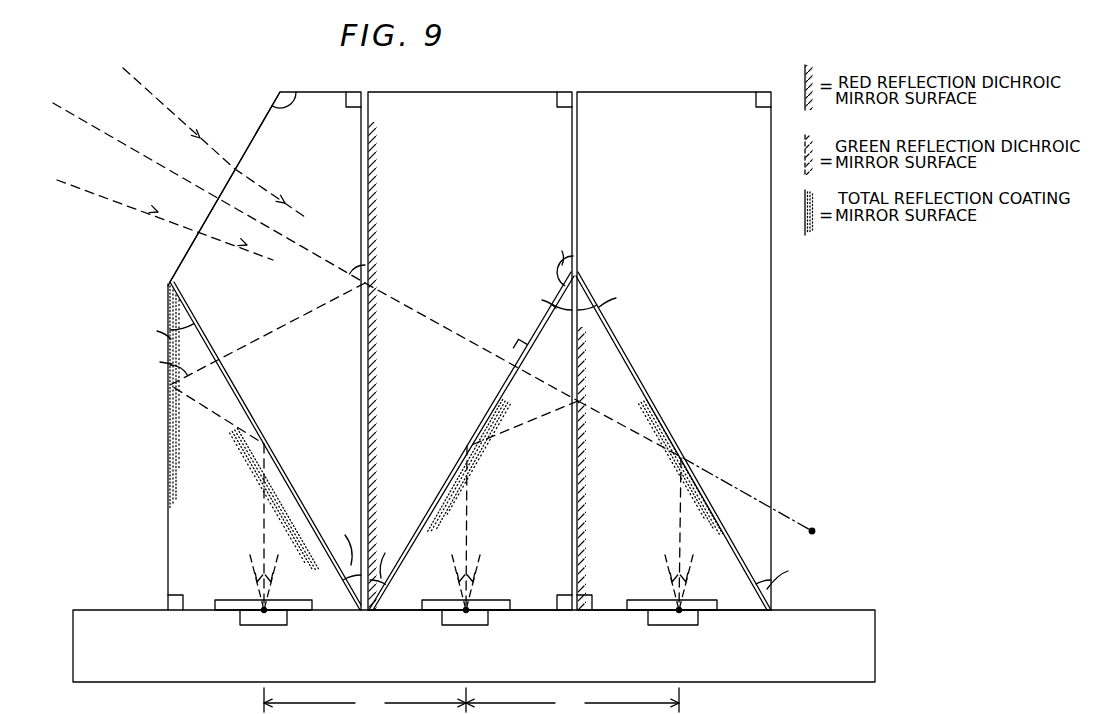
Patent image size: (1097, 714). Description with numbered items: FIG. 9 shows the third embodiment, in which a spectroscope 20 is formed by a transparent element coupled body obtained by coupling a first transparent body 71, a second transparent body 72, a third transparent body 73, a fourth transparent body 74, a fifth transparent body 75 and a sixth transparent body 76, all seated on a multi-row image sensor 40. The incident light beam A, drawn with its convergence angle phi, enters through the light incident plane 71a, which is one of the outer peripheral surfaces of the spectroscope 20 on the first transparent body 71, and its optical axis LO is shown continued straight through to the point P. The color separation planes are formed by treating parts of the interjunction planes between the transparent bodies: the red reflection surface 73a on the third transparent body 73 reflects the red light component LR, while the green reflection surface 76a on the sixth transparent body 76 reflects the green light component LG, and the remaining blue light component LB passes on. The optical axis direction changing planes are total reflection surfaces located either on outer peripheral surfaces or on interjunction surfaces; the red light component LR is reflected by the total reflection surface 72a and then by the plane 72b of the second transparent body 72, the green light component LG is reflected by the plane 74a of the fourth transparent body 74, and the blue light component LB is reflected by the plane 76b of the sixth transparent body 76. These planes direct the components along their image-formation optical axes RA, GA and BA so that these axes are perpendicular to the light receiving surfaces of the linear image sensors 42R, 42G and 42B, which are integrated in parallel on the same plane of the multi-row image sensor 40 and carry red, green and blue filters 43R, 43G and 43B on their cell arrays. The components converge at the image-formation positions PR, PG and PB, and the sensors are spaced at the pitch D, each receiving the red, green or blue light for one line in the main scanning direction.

The spectroscope 20 is at (162, 436).
The multi-row image sensor 40 is at (66, 625).
The first transparent body 71 is at (330, 167).
The light incident plane 71a is at (186, 256).
The second transparent body 72 is at (232, 476).
The total reflection surface 72a is at (168, 505).
The optical axis direction changing plane 72b is at (290, 481).
The third transparent body 73 is at (482, 169).
The red reflection surface 73a is at (366, 399).
The fourth transparent body 74 is at (569, 361).
The optical axis direction changing plane 74a is at (480, 423).
The fifth transparent body 75 is at (674, 169).
The sixth transparent body 76 is at (622, 391).
The green reflection surface 76a is at (578, 492).
The optical axis direction changing plane 76b is at (670, 432).
The linear image sensor 42R is at (288, 618).
The red filter 43R is at (227, 606).
The linear image sensor 42G is at (488, 618).
The green filter 43G is at (434, 606).
The linear image sensor 42B is at (704, 618).
The blue filter 43B is at (638, 606).
The image-formation position PR is at (266, 622).
The image-formation position PG is at (468, 622).
The image-formation position PB is at (680, 622).
The incident light beam A is at (117, 150).
The convergence angle of incident beam phi is at (177, 113).
The optical axis LO is at (780, 512).
The focal point on optical axis P is at (815, 532).
The red light component LR is at (300, 322).
The image-formation optical axis RA is at (262, 522).
The green light component LG is at (522, 424).
The image-formation optical axis GA is at (470, 535).
The blue light component LB is at (672, 475).
The image-formation optical axis BA is at (672, 531).
The detector pitch D is at (471, 701).